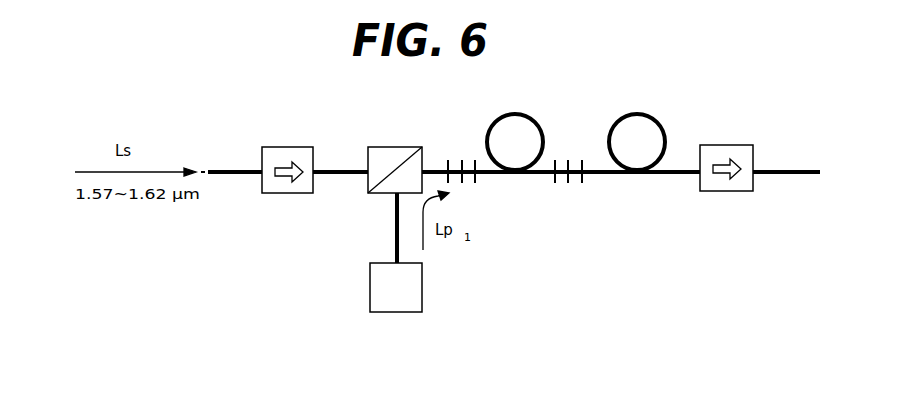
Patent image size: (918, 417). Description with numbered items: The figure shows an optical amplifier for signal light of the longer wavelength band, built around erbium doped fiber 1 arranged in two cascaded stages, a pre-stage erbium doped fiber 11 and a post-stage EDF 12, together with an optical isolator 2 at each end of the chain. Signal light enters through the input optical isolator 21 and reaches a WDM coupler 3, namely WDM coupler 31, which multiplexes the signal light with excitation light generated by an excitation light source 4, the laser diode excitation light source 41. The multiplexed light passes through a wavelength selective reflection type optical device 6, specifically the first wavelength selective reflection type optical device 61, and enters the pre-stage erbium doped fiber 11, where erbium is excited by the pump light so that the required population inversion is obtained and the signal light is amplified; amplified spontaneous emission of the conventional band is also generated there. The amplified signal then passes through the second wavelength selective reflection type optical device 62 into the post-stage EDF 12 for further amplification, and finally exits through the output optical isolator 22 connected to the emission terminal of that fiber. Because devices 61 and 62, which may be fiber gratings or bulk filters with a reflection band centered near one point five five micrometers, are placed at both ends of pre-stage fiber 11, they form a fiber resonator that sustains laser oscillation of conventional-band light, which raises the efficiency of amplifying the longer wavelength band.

The erbium doped fiber 1 is at (597, 125).
The pre-stage erbium doped fiber 11 is at (541, 124).
The post-stage EDF 12 is at (662, 124).
The optical isolator 2 is at (505, 140).
The optical isolator 21 is at (262, 147).
The optical isolator 22 is at (753, 145).
The WDM coupler 3 is at (375, 143).
The WDM coupler 31 is at (368, 147).
The excitation light source 4 is at (375, 311).
The excitation light source 41 is at (372, 312).
The wavelength selective reflection type optical device 6 is at (520, 165).
The wavelength selective reflection type optical device 61 is at (462, 160).
The wavelength selective reflection type optical device 62 is at (568, 183).